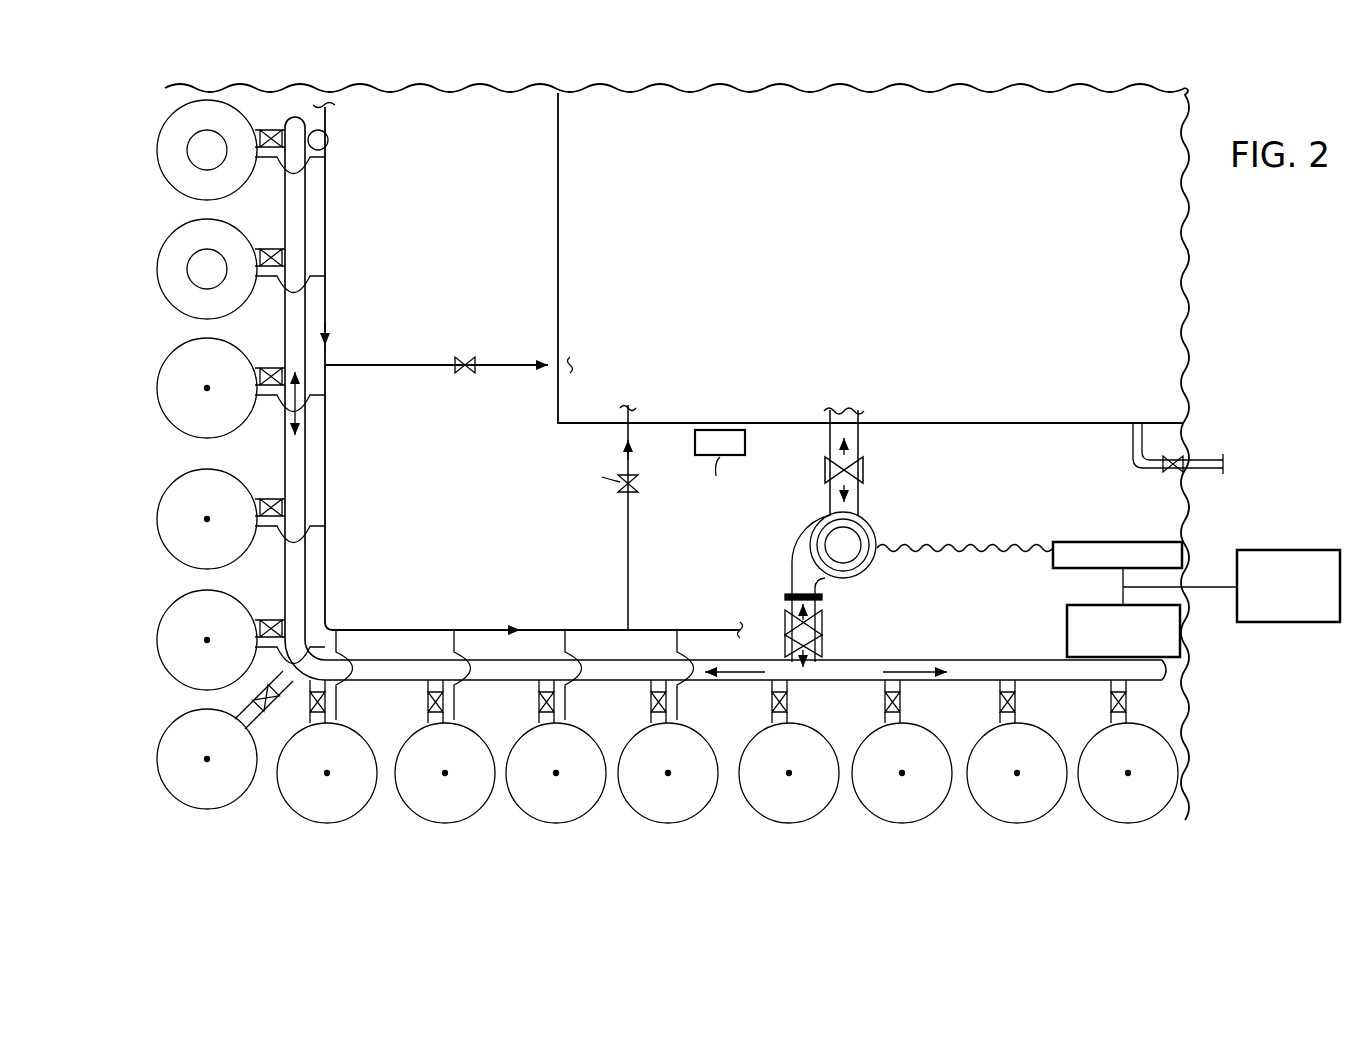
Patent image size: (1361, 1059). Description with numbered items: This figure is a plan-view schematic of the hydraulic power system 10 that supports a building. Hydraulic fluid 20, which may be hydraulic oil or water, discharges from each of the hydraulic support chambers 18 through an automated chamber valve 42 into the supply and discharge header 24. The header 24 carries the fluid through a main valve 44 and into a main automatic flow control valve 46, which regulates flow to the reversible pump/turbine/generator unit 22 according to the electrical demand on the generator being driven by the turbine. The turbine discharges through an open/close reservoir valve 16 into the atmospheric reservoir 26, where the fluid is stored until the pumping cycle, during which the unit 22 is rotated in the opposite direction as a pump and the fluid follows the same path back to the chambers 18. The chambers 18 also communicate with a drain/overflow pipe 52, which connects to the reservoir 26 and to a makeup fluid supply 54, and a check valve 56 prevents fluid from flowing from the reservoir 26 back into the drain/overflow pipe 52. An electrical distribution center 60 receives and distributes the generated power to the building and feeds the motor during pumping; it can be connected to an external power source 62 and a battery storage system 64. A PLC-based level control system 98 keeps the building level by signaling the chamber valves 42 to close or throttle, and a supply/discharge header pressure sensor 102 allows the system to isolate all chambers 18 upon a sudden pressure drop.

The hydraulic power system 10 is at (268, 810).
The hydraulic support chambers 18 is at (512, 735).
The supply and discharge header 24 is at (297, 213).
The automated chamber valve 42 is at (283, 260).
The drain/overflow pipe 52 is at (327, 333).
The check valve 56 is at (462, 375).
The supply/discharge header pressure sensor 102 is at (330, 138).
The atmospheric reservoir 26 is at (677, 452).
The hydraulic fluid 20 is at (758, 239).
The PLC-based level control system 98 is at (618, 517).
The open/close valve (reservoir) 16 is at (896, 455).
The reversible pump/turbine/generator unit 22 is at (872, 528).
The main automatic flow control valve 46 is at (822, 618).
The main valve 44 is at (822, 645).
The makeup fluid supply 54 is at (1200, 452).
The electrical distribution center 60 is at (1183, 543).
The external power source 62 is at (1293, 623).
The battery storage system 64 is at (1180, 647).